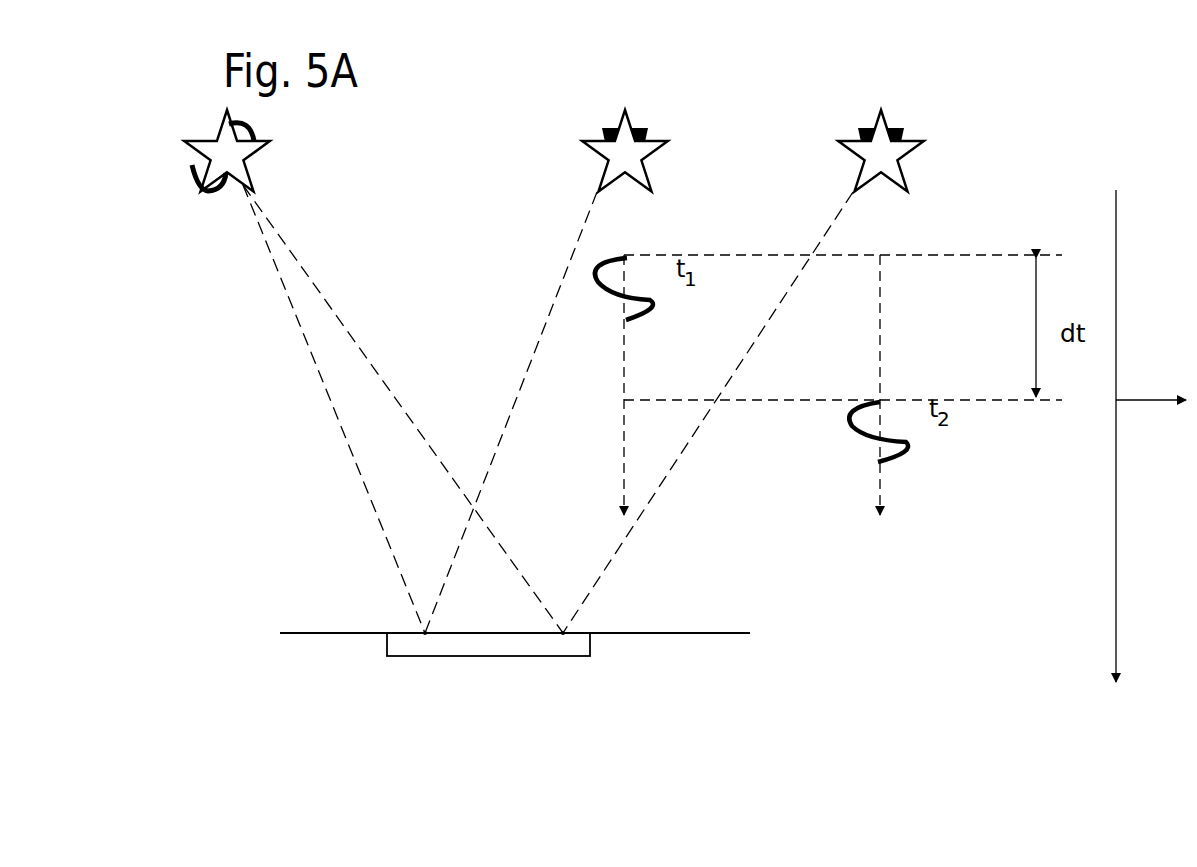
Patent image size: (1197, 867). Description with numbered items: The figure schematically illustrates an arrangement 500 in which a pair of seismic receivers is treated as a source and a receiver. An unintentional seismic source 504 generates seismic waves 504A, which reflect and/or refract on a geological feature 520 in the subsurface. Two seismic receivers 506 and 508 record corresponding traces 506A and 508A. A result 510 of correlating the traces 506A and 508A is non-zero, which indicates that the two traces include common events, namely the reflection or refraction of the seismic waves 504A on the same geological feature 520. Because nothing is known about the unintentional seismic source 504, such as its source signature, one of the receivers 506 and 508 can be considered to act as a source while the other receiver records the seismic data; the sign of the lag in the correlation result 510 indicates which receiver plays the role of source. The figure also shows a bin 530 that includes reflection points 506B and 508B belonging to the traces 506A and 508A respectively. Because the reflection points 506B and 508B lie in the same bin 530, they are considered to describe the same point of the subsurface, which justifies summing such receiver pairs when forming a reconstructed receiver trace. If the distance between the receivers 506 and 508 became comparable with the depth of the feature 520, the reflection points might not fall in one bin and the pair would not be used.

The scene / imaging system 500 is at (758, 83).
The unintentional seismic source 504 is at (250, 178).
The seismic waves 504A is at (340, 315).
The seismic receiver 506 is at (608, 157).
The trace 506A is at (624, 347).
The reflection point 506B is at (425, 636).
The seismic receiver 508 is at (905, 147).
The trace 508A is at (880, 347).
The reflection point 508B is at (563, 636).
The result of correlating traces 510 is at (1131, 404).
The geological feature 520 is at (650, 635).
The bin 530 is at (480, 657).